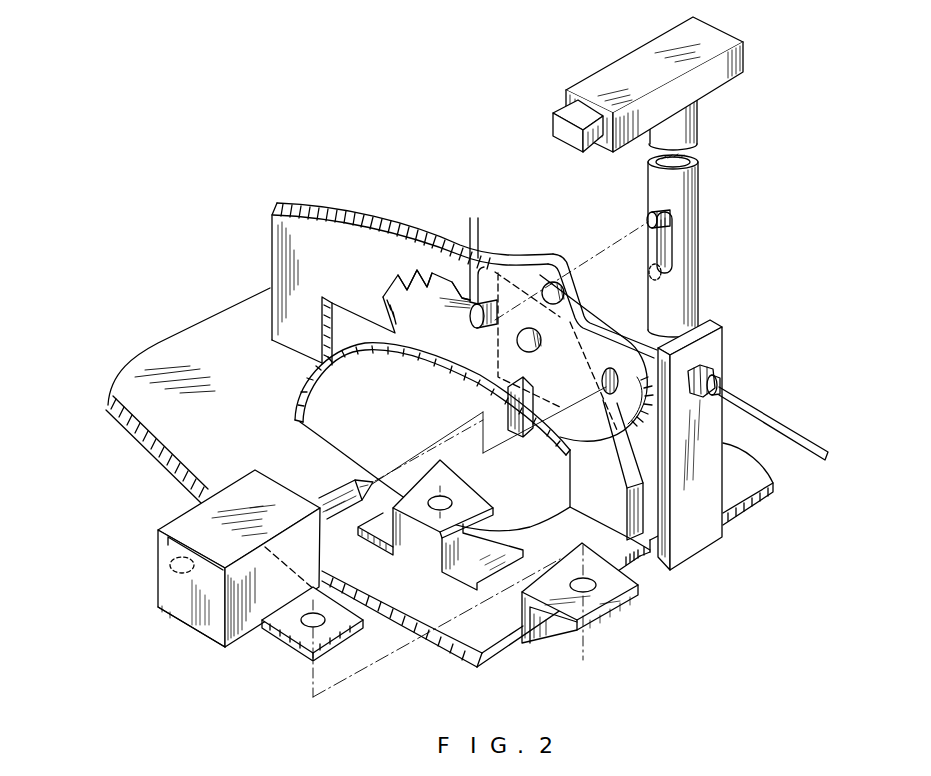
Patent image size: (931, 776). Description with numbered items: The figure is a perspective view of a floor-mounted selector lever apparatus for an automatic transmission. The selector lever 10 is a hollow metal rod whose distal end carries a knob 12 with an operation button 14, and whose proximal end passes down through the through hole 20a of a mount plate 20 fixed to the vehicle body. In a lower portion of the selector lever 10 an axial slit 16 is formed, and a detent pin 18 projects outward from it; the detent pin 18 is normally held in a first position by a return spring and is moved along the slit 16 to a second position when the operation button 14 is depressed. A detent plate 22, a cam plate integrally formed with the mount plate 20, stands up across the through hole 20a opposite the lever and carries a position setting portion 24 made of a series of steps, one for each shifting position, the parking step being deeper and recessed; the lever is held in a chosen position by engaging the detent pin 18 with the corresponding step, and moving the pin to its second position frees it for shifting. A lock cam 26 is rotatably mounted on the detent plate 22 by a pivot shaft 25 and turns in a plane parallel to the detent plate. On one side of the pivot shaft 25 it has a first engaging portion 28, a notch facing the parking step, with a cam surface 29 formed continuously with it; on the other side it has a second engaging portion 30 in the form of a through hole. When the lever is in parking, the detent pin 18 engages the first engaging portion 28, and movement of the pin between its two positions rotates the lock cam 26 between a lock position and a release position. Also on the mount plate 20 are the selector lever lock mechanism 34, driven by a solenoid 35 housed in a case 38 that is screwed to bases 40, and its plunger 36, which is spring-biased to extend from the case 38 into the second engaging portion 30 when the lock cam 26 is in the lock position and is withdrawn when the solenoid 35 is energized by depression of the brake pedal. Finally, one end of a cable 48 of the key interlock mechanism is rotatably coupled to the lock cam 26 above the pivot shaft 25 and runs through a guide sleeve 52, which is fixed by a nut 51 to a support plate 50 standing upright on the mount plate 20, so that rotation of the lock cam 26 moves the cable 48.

The selector lever 10 is at (695, 188).
The knob 12 is at (633, 60).
The operation button 14 is at (555, 122).
The slit 16 is at (696, 240).
The detent pin 18 is at (484, 330).
The mount plate 20 is at (153, 360).
The through hole 20a is at (300, 420).
The detent plate 22 is at (357, 233).
The position setting portion 24 is at (425, 312).
The pivot shaft 25 is at (535, 350).
The lock cam 26 is at (542, 267).
The first engaging portion 28 is at (470, 280).
The cam surface 29 is at (455, 338).
The second engaging portion 30 is at (605, 390).
The selector lever lock mechanism 34 is at (247, 640).
The solenoid 35 is at (205, 632).
The plunger 36 is at (330, 490).
The case 38 is at (183, 522).
The bases 40 is at (432, 525).
The cable 48 is at (785, 427).
The support plate 50 is at (715, 422).
The nut 51 is at (713, 372).
The guide sleeve 52 is at (720, 385).